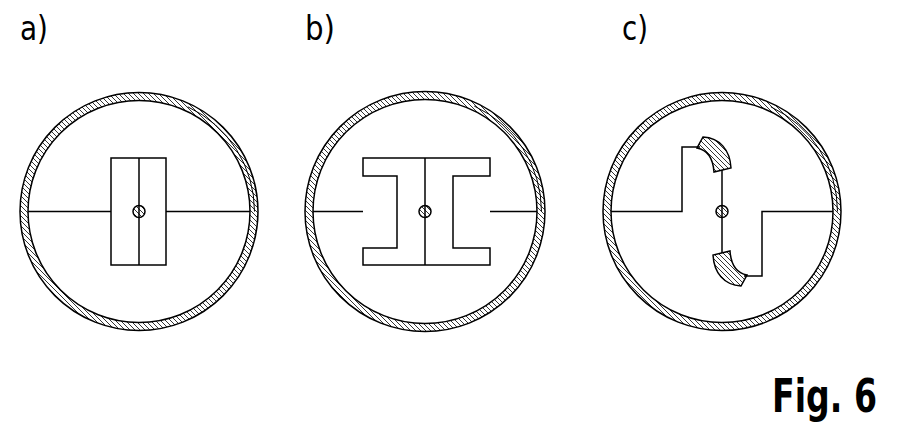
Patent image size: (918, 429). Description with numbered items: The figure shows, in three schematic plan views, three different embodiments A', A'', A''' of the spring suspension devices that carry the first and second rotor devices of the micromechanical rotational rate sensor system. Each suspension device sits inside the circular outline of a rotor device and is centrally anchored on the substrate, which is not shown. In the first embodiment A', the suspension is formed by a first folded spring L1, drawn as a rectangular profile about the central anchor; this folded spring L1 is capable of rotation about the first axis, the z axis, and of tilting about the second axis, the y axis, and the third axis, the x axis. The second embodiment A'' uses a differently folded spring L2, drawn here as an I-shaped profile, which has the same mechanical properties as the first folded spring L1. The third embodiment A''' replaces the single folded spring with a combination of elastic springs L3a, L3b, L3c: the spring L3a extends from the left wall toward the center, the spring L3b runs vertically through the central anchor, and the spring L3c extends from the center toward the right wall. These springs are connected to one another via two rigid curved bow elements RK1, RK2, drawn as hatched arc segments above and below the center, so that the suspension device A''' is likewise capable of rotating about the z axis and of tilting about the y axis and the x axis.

The first folded spring L1 is at (125, 158).
The differently folded spring L2 is at (405, 158).
The elastic spring L3a is at (658, 212).
The elastic spring L3b is at (722, 183).
The elastic spring L3c is at (793, 212).
The rigid curved bow element RK1 is at (712, 147).
The rigid curved bow element RK2 is at (727, 286).
The suspension device (first embodiment) A' is at (139, 205).
The suspension device (second embodiment) A'' is at (425, 205).
The suspension device (third embodiment) A''' is at (740, 212).